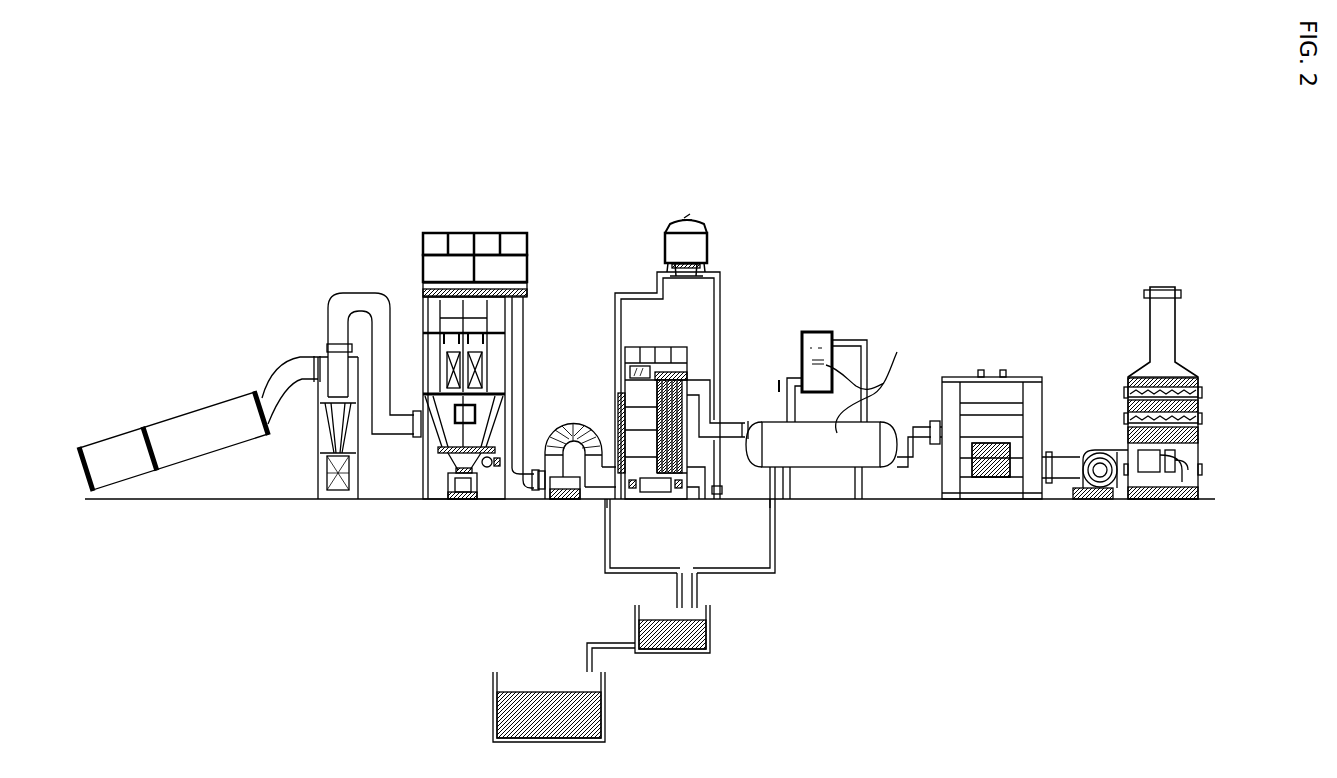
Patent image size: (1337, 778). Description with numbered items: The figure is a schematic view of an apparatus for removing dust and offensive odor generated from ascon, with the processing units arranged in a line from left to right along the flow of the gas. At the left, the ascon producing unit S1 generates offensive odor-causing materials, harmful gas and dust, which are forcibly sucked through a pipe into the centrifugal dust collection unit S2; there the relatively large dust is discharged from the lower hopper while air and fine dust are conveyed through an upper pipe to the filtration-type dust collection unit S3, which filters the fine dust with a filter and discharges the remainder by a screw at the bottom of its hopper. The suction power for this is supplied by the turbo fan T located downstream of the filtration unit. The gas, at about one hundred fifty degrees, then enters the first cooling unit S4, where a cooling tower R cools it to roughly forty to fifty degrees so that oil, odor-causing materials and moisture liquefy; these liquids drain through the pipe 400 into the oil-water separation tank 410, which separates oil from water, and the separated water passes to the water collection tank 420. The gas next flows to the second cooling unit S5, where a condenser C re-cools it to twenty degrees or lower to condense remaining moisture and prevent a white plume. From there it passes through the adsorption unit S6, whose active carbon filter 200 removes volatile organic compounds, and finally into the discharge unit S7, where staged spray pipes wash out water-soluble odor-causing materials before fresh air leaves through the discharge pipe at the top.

The ascon producing unit S1 is at (178, 396).
The centrifugal dust collection unit S2 is at (315, 340).
The filtration-type dust collection unit S3 is at (403, 238).
The first cooling unit S4 is at (638, 258).
The second cooling unit S5 is at (818, 318).
The adsorption unit S6 is at (965, 350).
The discharge unit S7 is at (1120, 298).
The cooling tower R is at (688, 216).
The condenser C is at (867, 386).
The turbo fan T is at (540, 508).
The active carbon filter 200 is at (985, 478).
The pipe 400 is at (612, 555).
The oil-water separation tank 410 is at (711, 628).
The water collection tank 420 is at (606, 712).